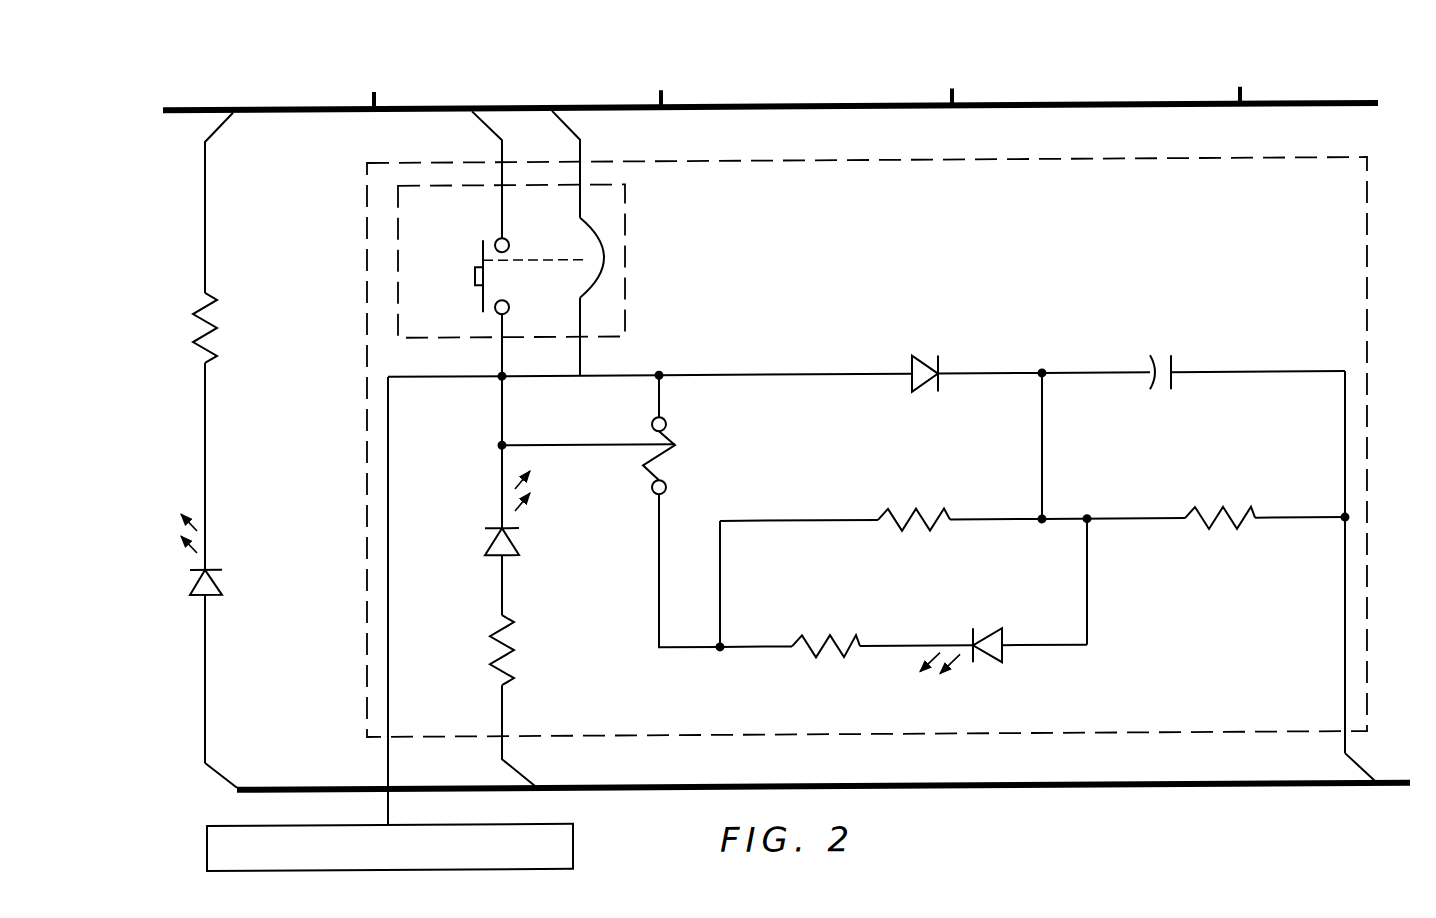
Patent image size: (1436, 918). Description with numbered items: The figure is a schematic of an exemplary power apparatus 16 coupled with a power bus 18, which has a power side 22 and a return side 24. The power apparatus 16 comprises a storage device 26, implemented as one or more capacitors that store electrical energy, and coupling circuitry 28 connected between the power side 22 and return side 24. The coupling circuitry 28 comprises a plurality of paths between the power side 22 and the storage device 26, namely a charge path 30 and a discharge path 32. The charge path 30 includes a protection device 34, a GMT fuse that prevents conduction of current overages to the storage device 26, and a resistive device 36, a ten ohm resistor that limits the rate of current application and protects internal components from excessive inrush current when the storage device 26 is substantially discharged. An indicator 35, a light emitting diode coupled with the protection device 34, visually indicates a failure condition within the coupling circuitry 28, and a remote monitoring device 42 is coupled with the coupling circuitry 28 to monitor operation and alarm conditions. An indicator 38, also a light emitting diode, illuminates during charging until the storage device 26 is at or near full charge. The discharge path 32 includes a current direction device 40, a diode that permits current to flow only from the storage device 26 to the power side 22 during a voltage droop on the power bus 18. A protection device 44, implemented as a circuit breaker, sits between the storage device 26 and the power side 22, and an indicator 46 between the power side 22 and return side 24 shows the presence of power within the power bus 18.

The power apparatus 16 is at (221, 437).
The power bus 18 is at (1379, 128).
The power side 22 is at (1312, 104).
The return side 24 is at (1210, 791).
The storage device 26 is at (1185, 359).
The coupling circuitry 28 is at (1024, 159).
The charge path 30 is at (1044, 457).
The discharge path 32 is at (750, 373).
The protection device 34 is at (635, 422).
The indicator 35 is at (468, 548).
The resistive device 36 is at (896, 470).
The indicator 38 is at (956, 631).
The current direction device 40 is at (898, 361).
The remote monitoring device 42 is at (573, 850).
The protection device 44 is at (630, 228).
The indicator 46 is at (177, 587).